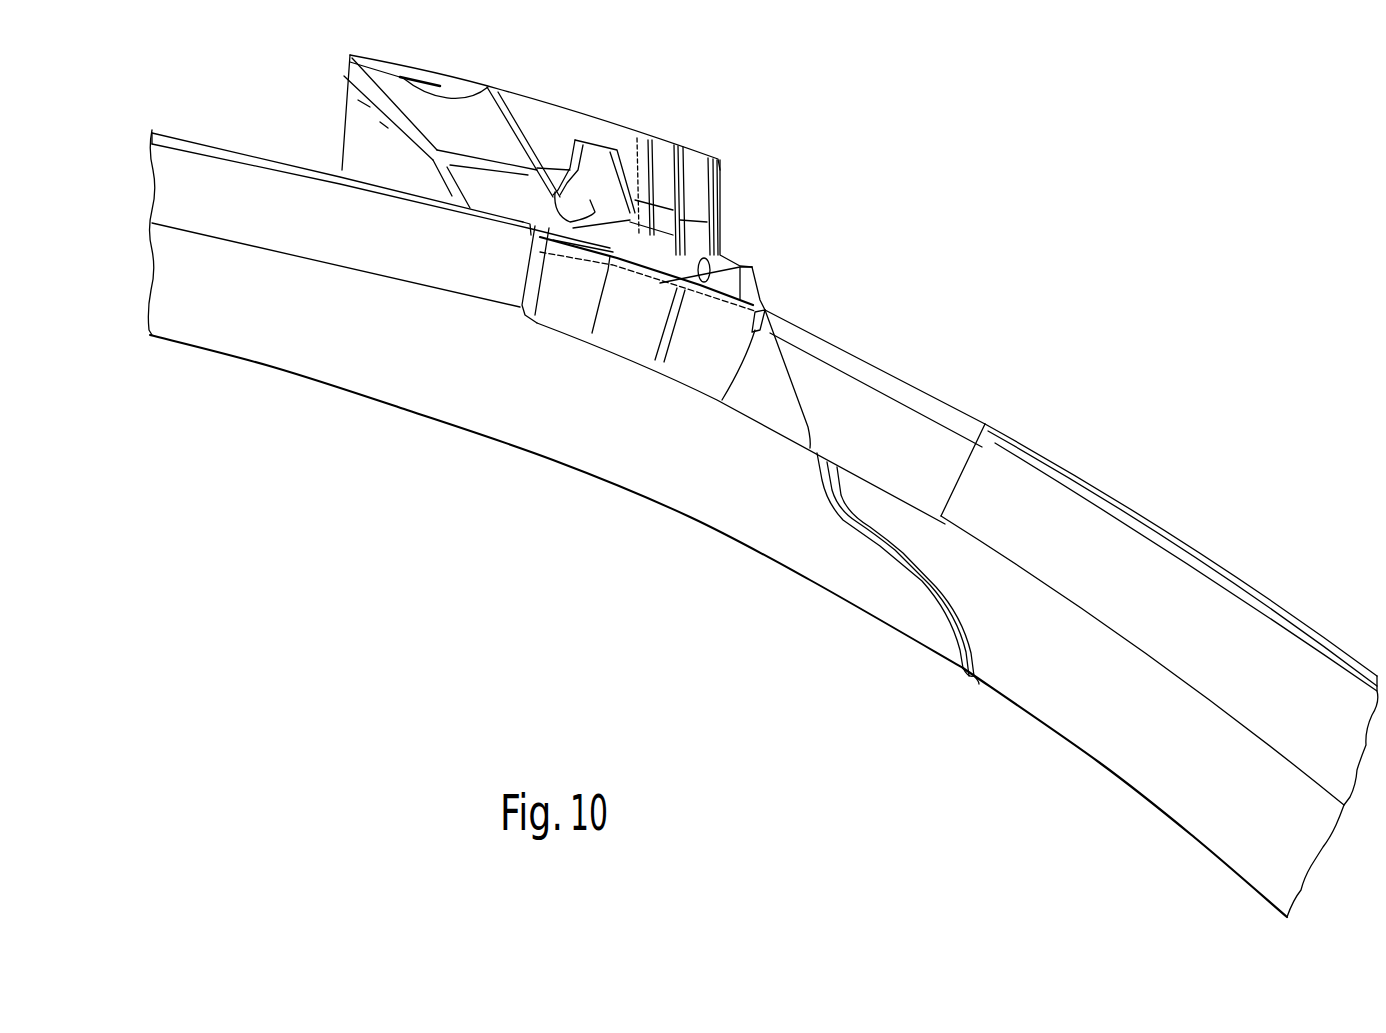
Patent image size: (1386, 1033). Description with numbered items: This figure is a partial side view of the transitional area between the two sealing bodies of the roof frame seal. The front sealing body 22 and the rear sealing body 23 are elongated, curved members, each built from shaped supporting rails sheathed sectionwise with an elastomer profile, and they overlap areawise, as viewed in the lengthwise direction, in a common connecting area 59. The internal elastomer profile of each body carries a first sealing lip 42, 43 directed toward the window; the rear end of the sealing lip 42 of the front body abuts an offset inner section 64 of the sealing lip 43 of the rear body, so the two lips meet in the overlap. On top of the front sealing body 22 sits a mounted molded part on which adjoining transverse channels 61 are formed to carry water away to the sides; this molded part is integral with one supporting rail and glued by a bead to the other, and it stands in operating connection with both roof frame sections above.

The sealing body 22 is at (272, 143).
The sealing body 23 is at (1222, 552).
The first sealing lip 42 is at (628, 473).
The first sealing lip 43 is at (1202, 817).
The connecting area 59 is at (927, 657).
The transverse channels 61 is at (633, 148).
The offset inner section 64 is at (973, 683).